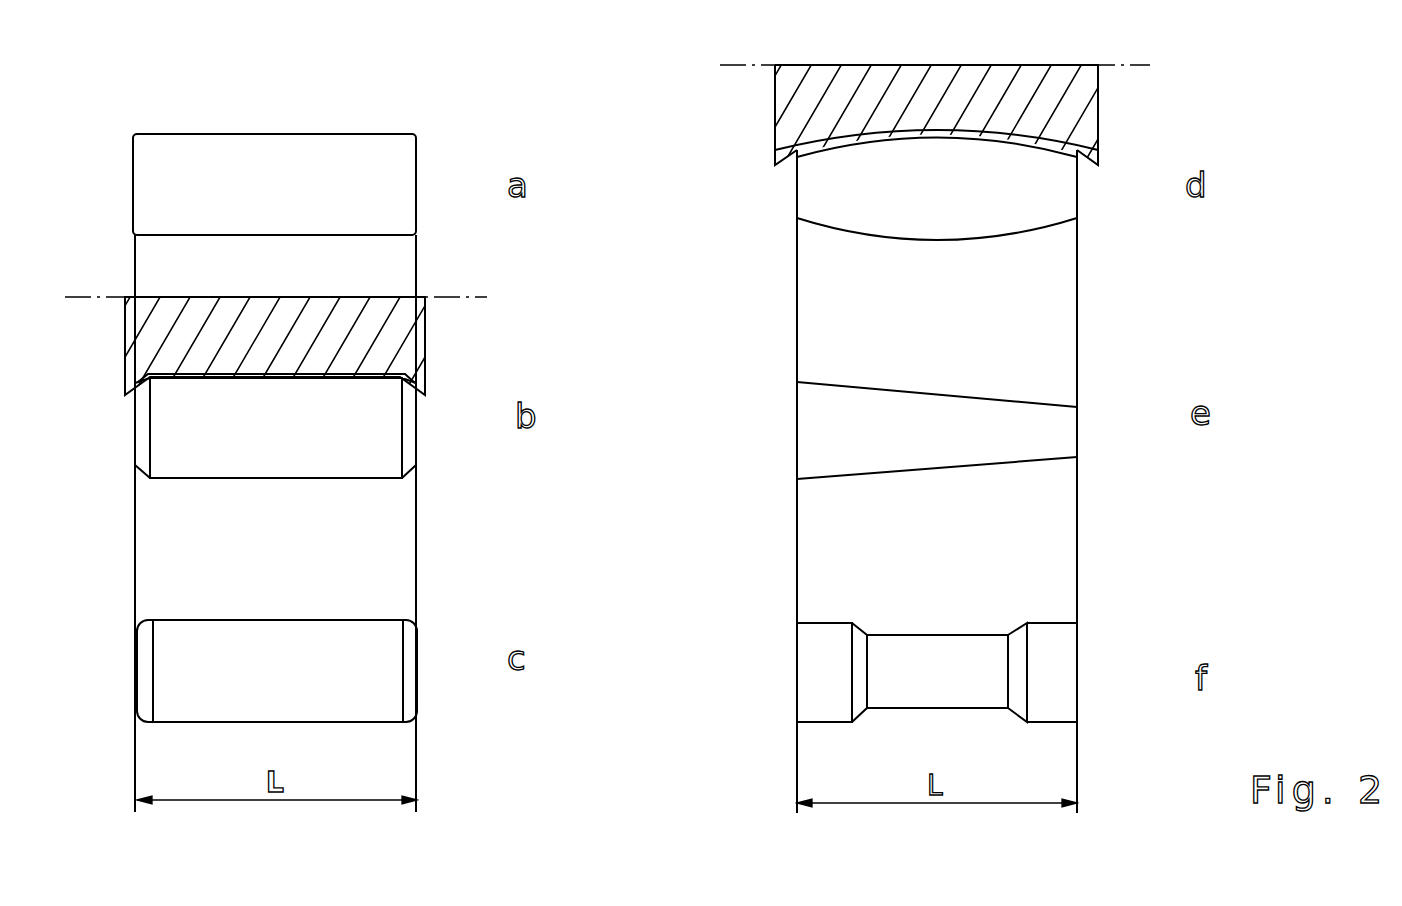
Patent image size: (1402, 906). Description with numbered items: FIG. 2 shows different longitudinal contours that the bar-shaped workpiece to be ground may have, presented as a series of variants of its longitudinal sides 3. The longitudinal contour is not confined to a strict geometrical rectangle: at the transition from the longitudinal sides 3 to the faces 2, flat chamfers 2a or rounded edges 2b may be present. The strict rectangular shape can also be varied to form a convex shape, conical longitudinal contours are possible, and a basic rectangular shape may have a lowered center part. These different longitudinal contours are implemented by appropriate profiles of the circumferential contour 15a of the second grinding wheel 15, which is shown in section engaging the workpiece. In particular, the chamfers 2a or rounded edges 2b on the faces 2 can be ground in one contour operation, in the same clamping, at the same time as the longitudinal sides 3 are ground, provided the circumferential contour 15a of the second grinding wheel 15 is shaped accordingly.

The faces 2 is at (133, 183).
The longitudinal sides 3 is at (288, 160).
The second grinding wheel 15 is at (390, 342).
The circumferential contour 15a is at (378, 372).
The flat chamfers 2a is at (408, 448).
The rounded edges 2b is at (408, 652).